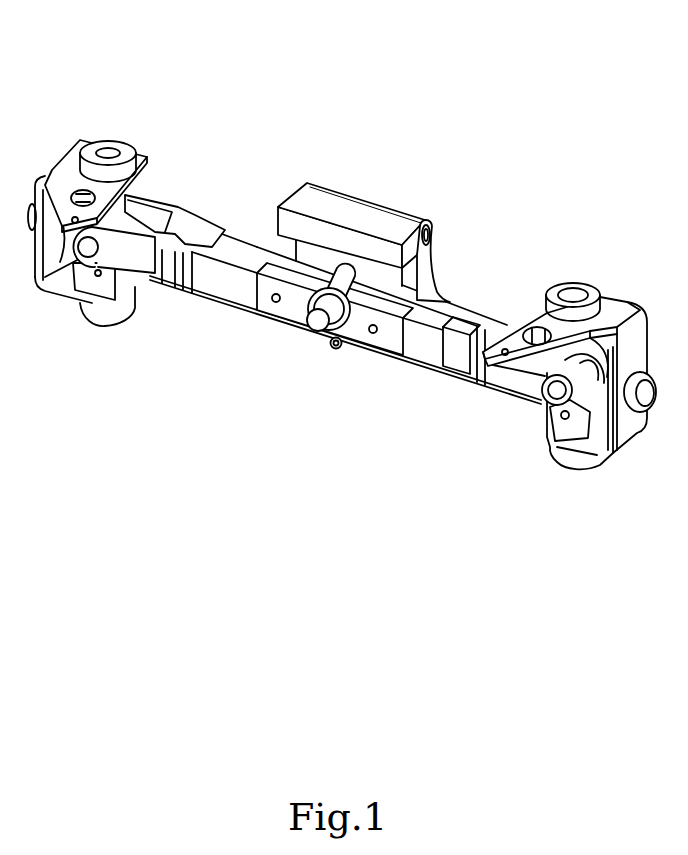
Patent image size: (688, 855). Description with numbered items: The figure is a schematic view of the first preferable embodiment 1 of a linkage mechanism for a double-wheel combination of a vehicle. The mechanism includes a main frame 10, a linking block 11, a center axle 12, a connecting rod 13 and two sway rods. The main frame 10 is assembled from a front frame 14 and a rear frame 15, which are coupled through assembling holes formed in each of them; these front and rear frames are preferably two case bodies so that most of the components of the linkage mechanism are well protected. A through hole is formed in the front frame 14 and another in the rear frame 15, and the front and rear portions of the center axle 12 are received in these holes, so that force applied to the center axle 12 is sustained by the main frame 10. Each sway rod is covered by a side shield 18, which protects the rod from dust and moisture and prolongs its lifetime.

The axle assembly 1 is at (413, 157).
The main frame 10 is at (476, 286).
The linking block 11 is at (287, 192).
The center axle 12 is at (315, 328).
The connecting rod 13 is at (363, 355).
The front frame 14 is at (277, 318).
The rear frame 15 is at (247, 250).
The side shield 18 is at (543, 461).